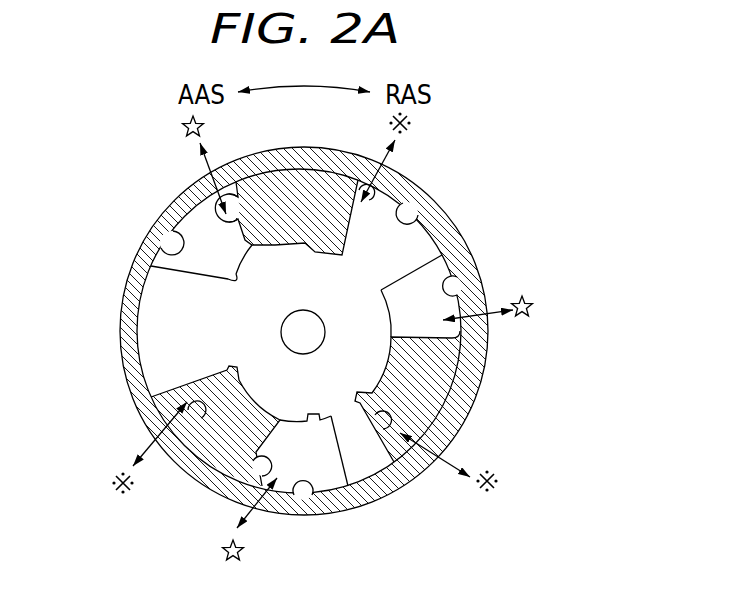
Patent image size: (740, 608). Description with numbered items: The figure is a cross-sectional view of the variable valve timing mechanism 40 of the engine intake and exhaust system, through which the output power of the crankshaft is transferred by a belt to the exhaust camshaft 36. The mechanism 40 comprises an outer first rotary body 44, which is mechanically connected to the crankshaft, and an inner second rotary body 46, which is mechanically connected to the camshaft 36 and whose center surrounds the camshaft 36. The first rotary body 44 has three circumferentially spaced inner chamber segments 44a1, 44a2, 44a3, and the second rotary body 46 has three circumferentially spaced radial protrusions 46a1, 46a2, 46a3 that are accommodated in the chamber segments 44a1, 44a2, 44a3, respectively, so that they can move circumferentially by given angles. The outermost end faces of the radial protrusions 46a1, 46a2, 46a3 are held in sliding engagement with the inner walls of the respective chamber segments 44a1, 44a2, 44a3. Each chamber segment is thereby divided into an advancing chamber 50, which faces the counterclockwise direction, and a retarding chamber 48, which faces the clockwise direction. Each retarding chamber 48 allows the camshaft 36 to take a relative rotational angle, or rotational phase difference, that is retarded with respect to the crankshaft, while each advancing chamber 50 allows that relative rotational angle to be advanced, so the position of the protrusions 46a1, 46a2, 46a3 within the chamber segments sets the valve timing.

The variable valve timing mechanism 40 is at (547, 132).
The first rotary body 44 is at (463, 237).
The inner chamber segment 44a1 is at (305, 494).
The inner chamber segment 44a2 is at (428, 222).
The inner chamber segment 44a3 is at (172, 235).
The second rotary body 46 is at (377, 363).
The radial protrusion 46a1 is at (403, 488).
The radial protrusion 46a2 is at (421, 242).
The radial protrusion 46a3 is at (160, 288).
The retarding chamber 48 is at (190, 195).
The advancing chamber 50 is at (368, 192).
The exhaust camshaft 36 is at (318, 311).